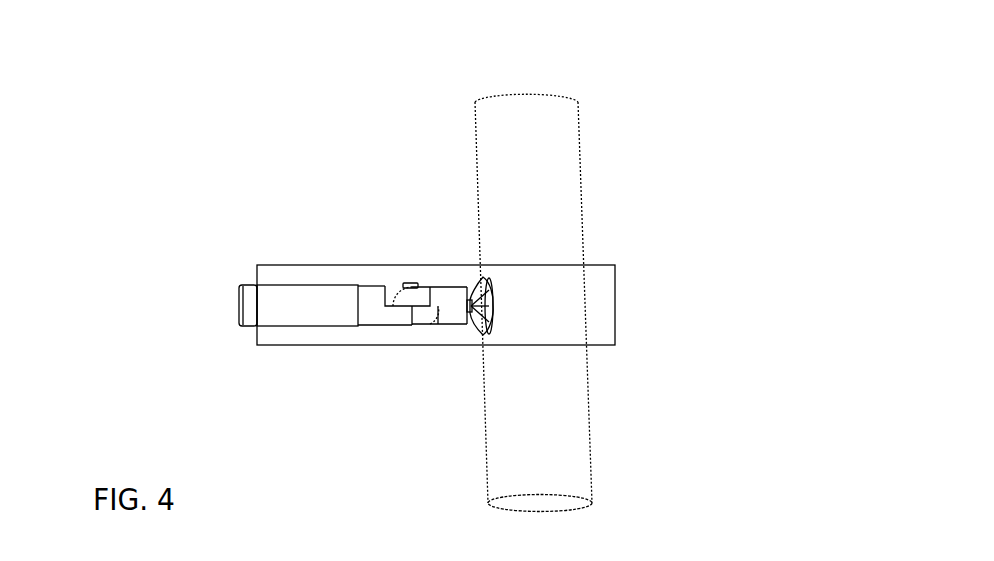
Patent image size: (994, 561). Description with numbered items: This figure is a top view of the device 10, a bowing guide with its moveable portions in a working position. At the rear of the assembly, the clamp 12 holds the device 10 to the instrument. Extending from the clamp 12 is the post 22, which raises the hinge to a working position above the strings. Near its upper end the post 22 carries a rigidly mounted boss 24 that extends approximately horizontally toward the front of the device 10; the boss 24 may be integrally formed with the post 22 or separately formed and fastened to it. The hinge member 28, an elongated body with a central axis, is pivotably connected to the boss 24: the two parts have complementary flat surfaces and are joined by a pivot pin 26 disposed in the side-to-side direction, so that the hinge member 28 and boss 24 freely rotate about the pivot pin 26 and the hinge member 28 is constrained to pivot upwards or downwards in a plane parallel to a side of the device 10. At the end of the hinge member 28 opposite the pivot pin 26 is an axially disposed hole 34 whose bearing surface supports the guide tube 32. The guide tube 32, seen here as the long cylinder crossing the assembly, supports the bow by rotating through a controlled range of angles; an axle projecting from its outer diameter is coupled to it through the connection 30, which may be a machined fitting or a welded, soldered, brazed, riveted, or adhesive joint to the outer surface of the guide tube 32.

The device 10 is at (675, 377).
The clamp 12 is at (288, 340).
The post 22 is at (285, 307).
The boss 24 is at (385, 313).
The pivot pin 26 is at (412, 283).
The hinge member 28 is at (438, 297).
The connection 30 is at (481, 312).
The guide tube 32 is at (558, 172).
The hole 34 is at (483, 292).